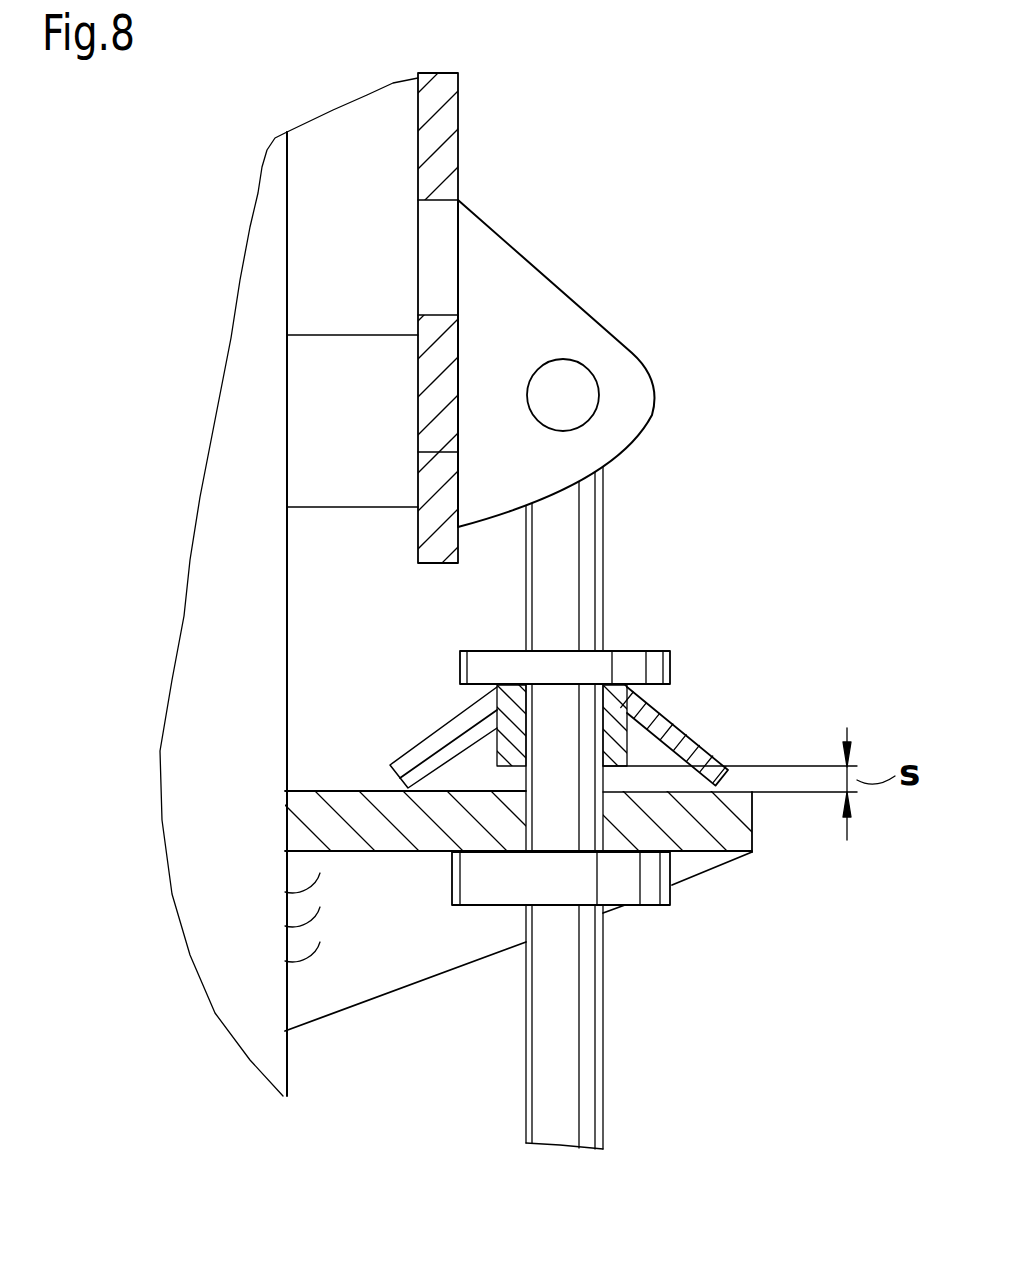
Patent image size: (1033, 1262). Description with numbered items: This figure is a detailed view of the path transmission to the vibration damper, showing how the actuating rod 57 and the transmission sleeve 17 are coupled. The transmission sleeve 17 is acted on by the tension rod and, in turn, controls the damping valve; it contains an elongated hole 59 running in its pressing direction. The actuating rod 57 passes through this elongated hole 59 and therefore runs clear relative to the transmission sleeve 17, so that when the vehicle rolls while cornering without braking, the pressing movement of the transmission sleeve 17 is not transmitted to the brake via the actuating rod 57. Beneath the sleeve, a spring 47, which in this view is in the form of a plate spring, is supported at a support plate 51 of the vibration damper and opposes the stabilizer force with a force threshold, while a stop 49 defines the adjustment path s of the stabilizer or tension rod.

The transmission sleeve 17 is at (455, 140).
The elongated hole 59 is at (447, 238).
The actuating rod 57 is at (585, 1003).
The stop 49 is at (613, 722).
The spring 47 is at (673, 742).
The support plate 51 is at (415, 968).